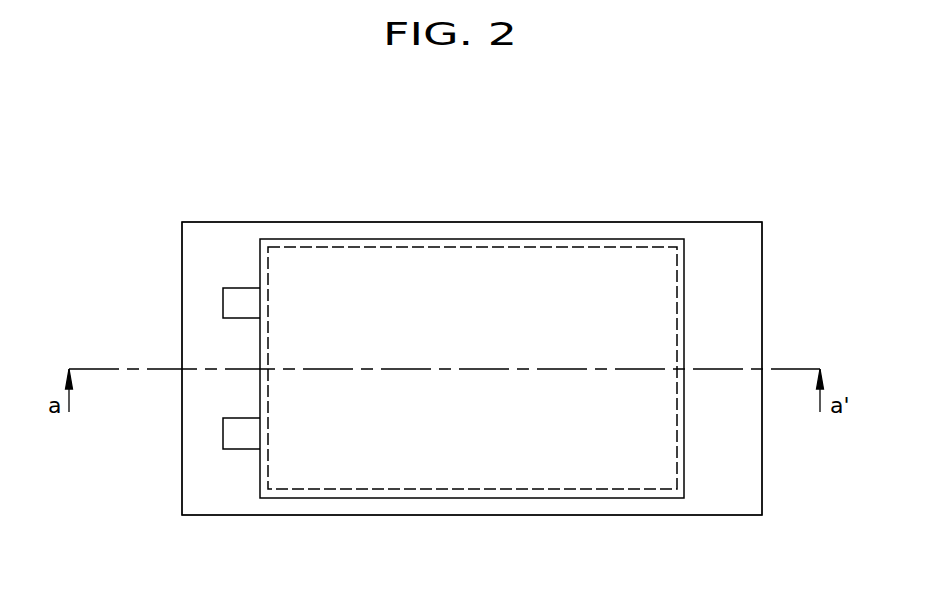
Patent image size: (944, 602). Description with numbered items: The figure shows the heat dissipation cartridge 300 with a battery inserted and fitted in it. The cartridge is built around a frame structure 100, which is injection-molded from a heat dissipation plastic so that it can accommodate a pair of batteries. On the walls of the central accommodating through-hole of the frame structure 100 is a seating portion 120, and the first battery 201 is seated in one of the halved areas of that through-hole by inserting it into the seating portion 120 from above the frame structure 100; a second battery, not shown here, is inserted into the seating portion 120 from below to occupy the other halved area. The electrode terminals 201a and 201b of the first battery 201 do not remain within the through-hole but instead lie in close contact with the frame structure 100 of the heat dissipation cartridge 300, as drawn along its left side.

The heat dissipation cartridge 300 is at (745, 192).
The frame structure 100 is at (730, 287).
The seating portion 120 is at (460, 245).
The first battery 201 is at (517, 278).
The electrode terminal 201a is at (235, 307).
The electrode terminal 201b is at (233, 435).